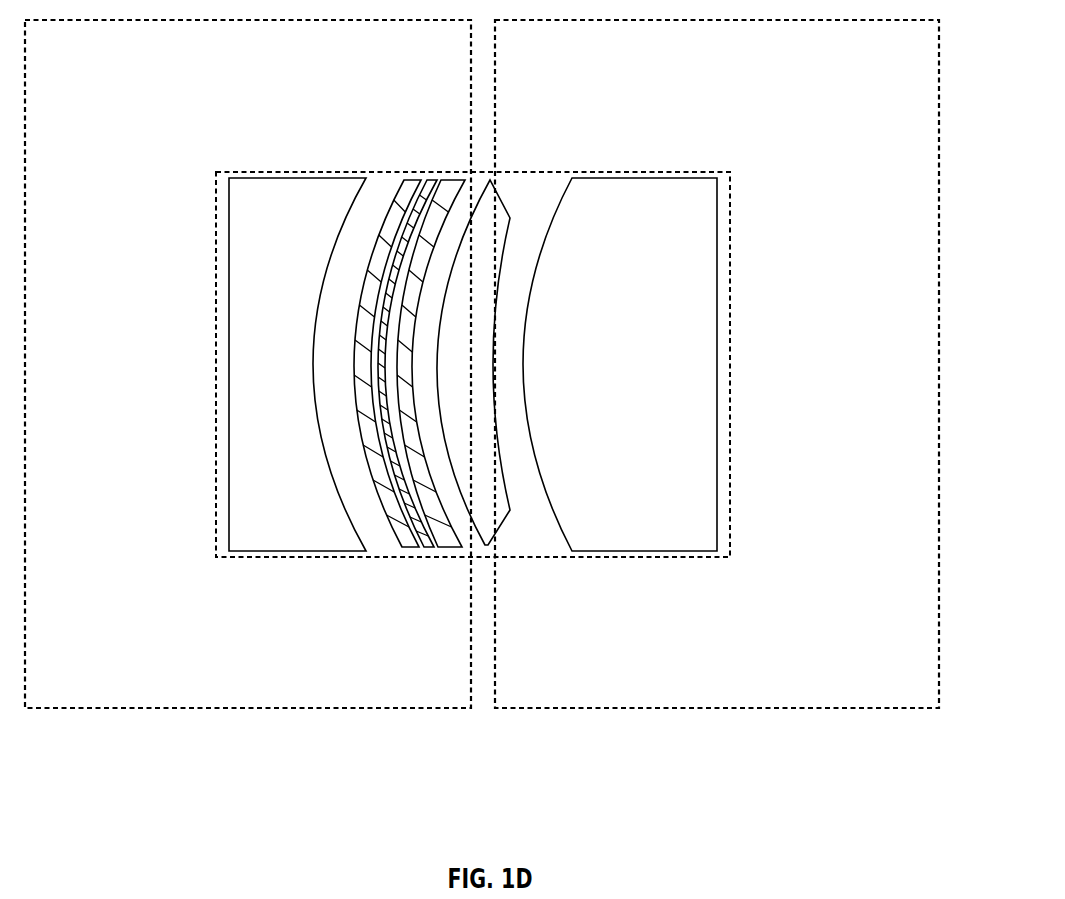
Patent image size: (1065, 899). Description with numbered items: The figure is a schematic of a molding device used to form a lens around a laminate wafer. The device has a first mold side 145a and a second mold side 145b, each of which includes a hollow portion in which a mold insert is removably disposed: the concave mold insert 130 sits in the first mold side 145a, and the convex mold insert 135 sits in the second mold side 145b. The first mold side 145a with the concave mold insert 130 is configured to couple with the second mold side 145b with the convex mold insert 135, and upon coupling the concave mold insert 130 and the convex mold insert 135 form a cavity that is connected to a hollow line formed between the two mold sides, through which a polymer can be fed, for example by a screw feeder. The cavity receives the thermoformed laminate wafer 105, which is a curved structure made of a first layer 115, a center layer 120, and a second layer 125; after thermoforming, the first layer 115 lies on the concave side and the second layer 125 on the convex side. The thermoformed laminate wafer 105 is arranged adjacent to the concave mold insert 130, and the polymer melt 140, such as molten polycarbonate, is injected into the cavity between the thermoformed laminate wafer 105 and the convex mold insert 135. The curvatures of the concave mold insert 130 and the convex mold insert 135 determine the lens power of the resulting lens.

The thermoformed laminate wafer 105 is at (455, 167).
The first layer 115 is at (424, 514).
The center layer 120 is at (415, 532).
The second layer 125 is at (372, 494).
The concave mold insert 130 is at (240, 492).
The convex mold insert 135 is at (702, 490).
The polymer melt 140 is at (497, 515).
The first mold side 145a is at (180, 683).
The second mold side 145b is at (827, 685).